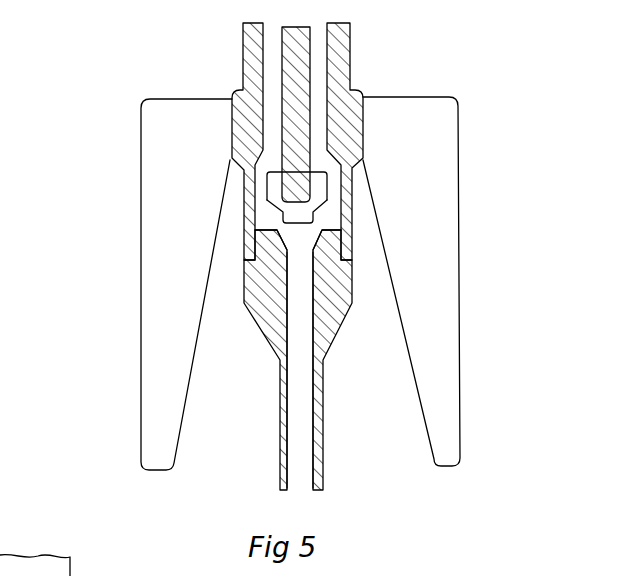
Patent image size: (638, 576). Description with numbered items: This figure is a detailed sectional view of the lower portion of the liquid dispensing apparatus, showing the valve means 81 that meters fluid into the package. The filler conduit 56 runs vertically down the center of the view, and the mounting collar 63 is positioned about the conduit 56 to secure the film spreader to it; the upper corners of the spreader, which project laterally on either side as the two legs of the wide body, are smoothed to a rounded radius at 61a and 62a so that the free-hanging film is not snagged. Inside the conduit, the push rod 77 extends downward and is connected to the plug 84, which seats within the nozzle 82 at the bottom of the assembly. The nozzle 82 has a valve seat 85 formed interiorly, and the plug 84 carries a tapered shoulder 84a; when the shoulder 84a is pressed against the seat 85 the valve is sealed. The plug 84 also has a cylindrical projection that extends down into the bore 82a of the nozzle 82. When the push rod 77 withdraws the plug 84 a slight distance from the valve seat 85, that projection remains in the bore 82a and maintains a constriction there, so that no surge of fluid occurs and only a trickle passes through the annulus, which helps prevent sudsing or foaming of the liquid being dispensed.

The valve means 81 is at (91, 248).
The rounded radius of spreader upper corner 61a is at (141, 100).
The rounded radius of spreader upper corner 62a is at (458, 97).
The mounting collar 63 is at (232, 92).
The filler conduit 56 is at (351, 62).
The push rod 77 is at (307, 26).
The plug 84 is at (327, 182).
The tapered shoulder 84a is at (316, 205).
The nozzle 82 is at (270, 352).
The bore 82a is at (313, 298).
The valve seat 85 is at (317, 236).